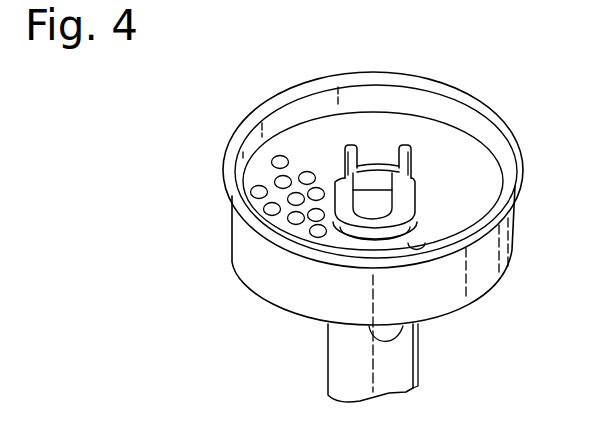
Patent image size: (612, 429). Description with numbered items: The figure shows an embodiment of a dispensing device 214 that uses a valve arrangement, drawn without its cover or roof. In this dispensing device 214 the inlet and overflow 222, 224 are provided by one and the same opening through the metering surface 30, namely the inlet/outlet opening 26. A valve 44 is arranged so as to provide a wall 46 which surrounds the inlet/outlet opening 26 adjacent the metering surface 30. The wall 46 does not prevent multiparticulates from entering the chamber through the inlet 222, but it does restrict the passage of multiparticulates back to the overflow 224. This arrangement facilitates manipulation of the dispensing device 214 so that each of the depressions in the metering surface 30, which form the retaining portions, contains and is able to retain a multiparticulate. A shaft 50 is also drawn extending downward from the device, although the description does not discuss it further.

The dispensing device 214 is at (219, 113).
The inlet/outlet opening 26 is at (363, 205).
The inlet 222 is at (386, 180).
The overflow 224 is at (372, 196).
The metering surface 30 is at (457, 187).
The valve 44 is at (330, 236).
The wall 46 is at (376, 232).
The shaft 50 is at (349, 370).